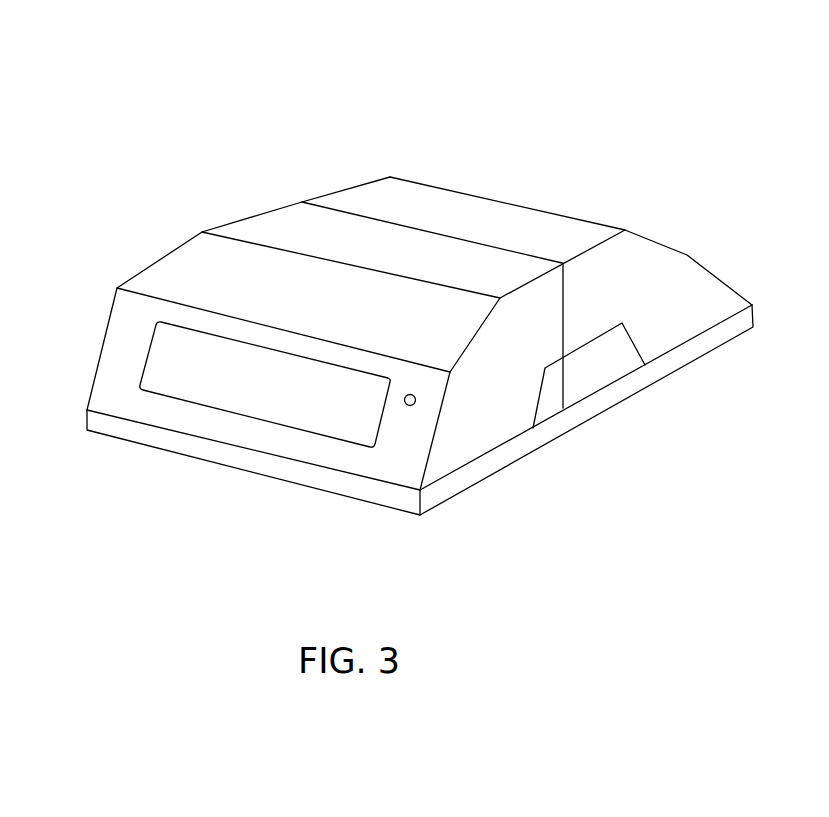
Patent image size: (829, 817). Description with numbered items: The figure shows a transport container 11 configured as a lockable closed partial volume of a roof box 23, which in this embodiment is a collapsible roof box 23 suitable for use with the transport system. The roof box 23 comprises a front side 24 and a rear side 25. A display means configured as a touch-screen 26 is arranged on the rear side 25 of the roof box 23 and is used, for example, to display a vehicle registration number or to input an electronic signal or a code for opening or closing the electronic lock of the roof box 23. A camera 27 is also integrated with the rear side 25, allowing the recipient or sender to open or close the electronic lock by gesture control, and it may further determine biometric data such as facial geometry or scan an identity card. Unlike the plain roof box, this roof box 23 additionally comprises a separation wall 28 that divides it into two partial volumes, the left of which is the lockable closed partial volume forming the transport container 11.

The transport container 11 is at (302, 202).
The roof box 23 is at (358, 185).
The front side 24 is at (615, 188).
The rear side 25 is at (94, 326).
The touch-screen 26 is at (263, 380).
The camera 27 is at (416, 405).
The separation wall 28 is at (563, 310).